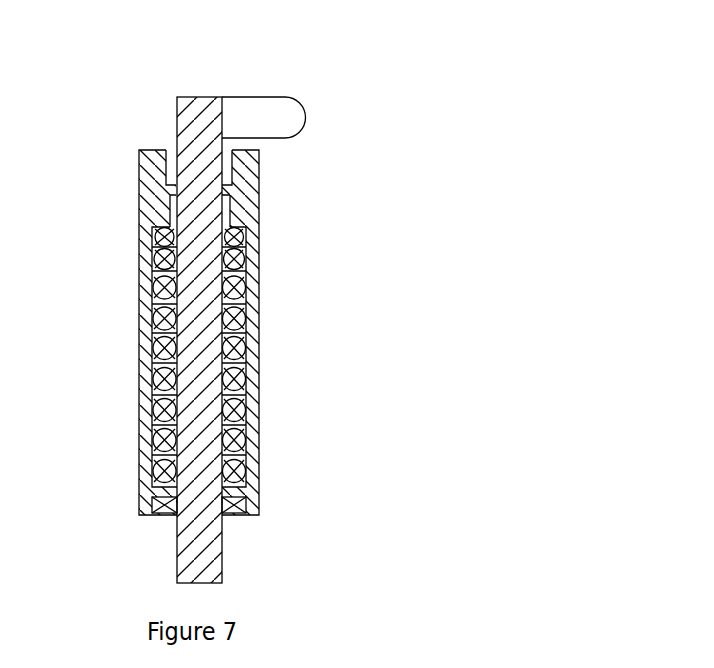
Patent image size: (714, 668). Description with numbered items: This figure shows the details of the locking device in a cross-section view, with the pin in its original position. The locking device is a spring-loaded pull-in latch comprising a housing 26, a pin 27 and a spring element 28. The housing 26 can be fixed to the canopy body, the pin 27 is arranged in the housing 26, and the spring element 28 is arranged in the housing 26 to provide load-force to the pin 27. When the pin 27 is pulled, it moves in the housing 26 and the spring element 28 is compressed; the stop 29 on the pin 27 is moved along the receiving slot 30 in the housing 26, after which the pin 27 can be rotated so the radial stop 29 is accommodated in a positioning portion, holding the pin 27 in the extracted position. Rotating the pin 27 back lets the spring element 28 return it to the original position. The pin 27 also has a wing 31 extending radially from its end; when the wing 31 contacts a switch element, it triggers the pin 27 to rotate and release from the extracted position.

The housing 26 is at (148, 462).
The pin 27 is at (192, 304).
The spring element 28 is at (160, 382).
The radial stop 29 is at (171, 192).
The receiving slot 30 is at (171, 158).
The wing 31 is at (288, 120).